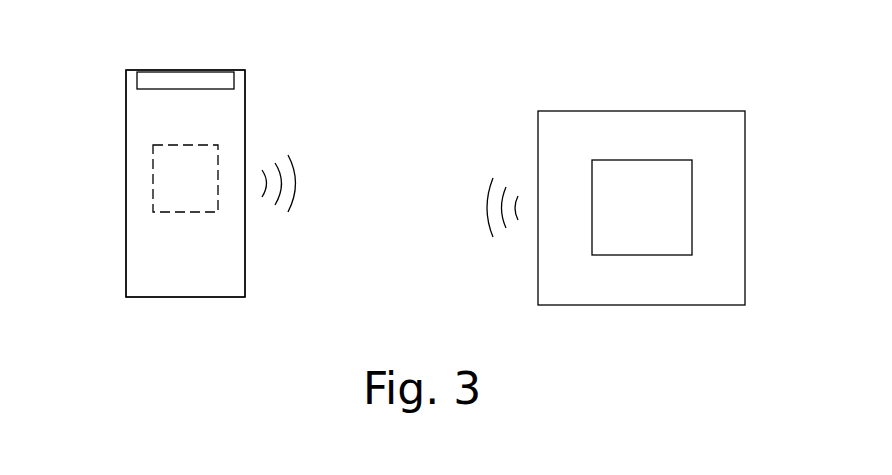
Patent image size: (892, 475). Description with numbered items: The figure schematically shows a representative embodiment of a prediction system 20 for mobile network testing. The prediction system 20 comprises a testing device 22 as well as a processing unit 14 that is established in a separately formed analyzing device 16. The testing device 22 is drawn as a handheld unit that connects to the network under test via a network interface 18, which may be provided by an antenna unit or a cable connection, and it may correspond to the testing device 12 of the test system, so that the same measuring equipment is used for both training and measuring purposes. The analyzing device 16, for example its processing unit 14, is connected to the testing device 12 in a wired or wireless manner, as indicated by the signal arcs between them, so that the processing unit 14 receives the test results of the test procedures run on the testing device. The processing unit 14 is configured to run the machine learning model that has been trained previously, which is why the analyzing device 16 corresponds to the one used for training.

The prediction system 20 is at (97, 89).
The testing device 12 is at (153, 269).
The processing unit 14 is at (153, 173).
The network interface 18 is at (182, 80).
The testing device 22 is at (190, 282).
The analyzing device 16 is at (613, 282).